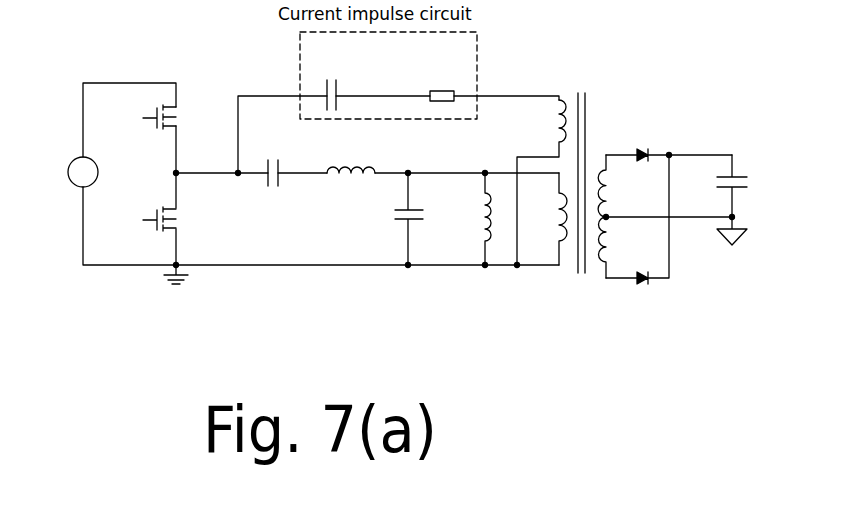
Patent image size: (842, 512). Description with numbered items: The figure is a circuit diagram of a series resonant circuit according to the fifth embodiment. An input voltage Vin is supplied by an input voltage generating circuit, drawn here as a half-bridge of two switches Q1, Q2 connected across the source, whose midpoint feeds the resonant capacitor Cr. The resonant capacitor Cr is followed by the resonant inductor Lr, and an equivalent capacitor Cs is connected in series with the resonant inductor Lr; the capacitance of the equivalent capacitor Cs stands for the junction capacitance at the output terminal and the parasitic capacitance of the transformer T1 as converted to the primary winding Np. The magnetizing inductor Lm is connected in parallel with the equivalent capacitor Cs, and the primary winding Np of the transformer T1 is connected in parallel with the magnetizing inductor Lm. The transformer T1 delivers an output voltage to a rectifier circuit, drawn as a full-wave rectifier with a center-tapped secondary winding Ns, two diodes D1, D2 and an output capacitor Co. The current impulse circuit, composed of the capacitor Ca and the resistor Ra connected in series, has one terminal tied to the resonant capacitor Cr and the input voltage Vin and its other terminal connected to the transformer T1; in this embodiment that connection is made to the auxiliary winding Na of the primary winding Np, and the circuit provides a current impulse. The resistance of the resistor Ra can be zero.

The input voltage Vin is at (64, 172).
The upper switch transistor Q1 is at (147, 114).
The lower switch transistor Q2 is at (147, 219).
The capacitor Ca is at (329, 80).
The resistor Ra is at (442, 76).
The resonant capacitor Cr is at (273, 184).
The resonant inductor Lr is at (351, 188).
The equivalent capacitor Cs is at (402, 219).
The magnetizing inductor Lm is at (476, 219).
The transformer T1 is at (579, 167).
The auxiliary winding Na is at (541, 182).
The primary winding Np is at (551, 219).
The secondary windings Ns is at (617, 216).
The rectifier diode 1 D1 is at (640, 140).
The rectifier diode 2 D2 is at (640, 297).
The output capacitor Co is at (740, 200).